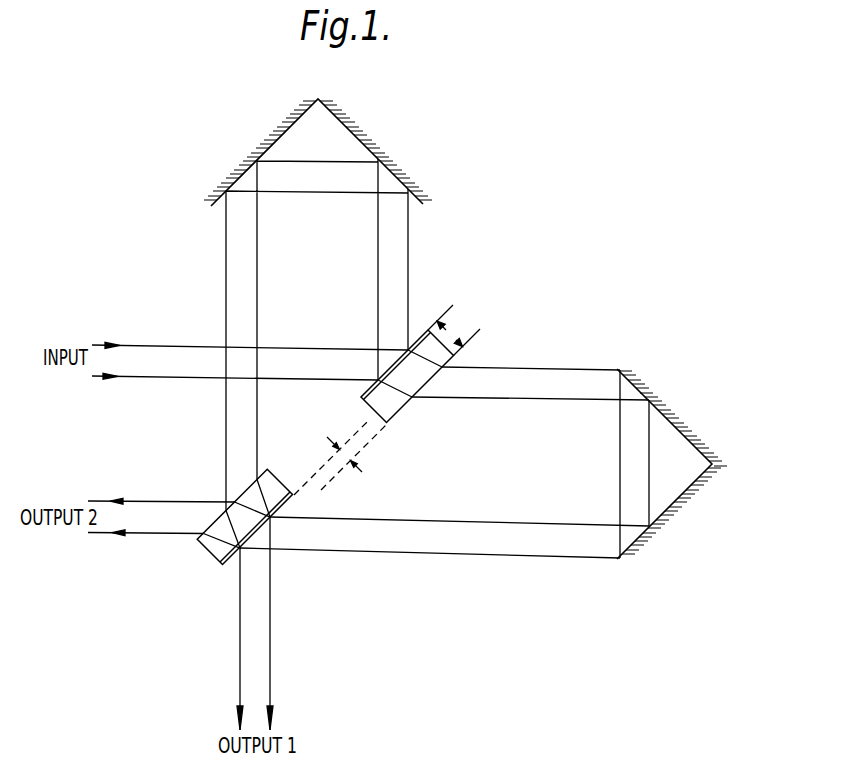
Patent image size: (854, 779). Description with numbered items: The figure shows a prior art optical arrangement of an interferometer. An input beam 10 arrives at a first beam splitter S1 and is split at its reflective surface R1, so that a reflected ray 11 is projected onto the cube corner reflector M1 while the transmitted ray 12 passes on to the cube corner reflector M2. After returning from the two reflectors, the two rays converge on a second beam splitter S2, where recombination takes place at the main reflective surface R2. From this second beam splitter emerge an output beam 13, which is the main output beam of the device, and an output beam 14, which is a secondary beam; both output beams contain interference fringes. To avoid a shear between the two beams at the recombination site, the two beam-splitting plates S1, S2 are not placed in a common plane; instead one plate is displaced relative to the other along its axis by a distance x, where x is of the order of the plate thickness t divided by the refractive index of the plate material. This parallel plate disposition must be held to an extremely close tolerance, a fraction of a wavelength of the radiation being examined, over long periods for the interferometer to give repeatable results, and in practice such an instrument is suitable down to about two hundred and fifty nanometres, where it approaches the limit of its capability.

The input beam 10 is at (158, 363).
The reflected ray 11 is at (317, 173).
The transmitted ray 12 is at (543, 384).
The output beam 13 is at (257, 663).
The output beam 14 is at (148, 519).
The cube corner reflector M1 is at (364, 132).
The cube corner reflector M2 is at (697, 441).
The first beam splitter S1 is at (396, 414).
The second beam splitter S2 is at (235, 552).
The reflective surface R1 is at (415, 343).
The main reflective surface R2 is at (226, 566).
The thickness of the plate t is at (454, 330).
The distance x is at (356, 466).